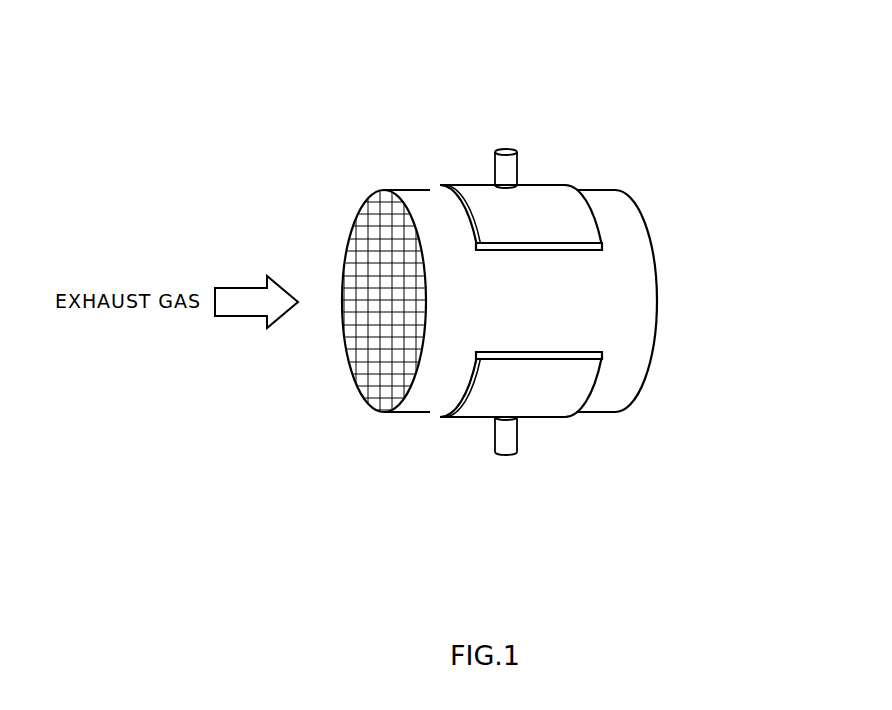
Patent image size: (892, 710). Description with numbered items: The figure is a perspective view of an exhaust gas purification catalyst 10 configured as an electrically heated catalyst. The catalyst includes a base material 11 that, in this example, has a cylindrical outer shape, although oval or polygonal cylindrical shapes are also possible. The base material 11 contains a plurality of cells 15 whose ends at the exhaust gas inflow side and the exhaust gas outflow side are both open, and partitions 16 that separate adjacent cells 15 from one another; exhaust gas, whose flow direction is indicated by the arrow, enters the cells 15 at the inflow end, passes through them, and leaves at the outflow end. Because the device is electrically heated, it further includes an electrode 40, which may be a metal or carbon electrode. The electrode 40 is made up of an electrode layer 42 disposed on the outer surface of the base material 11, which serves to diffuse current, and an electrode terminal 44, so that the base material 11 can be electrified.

The exhaust gas purification catalyst 10 is at (205, 48).
The base material 11 is at (410, 190).
The cells 15 is at (377, 295).
The partitions 16 is at (392, 344).
The electrode 40 is at (513, 80).
The electrode layer 42 is at (483, 198).
The electrode terminal 44 is at (506, 148).